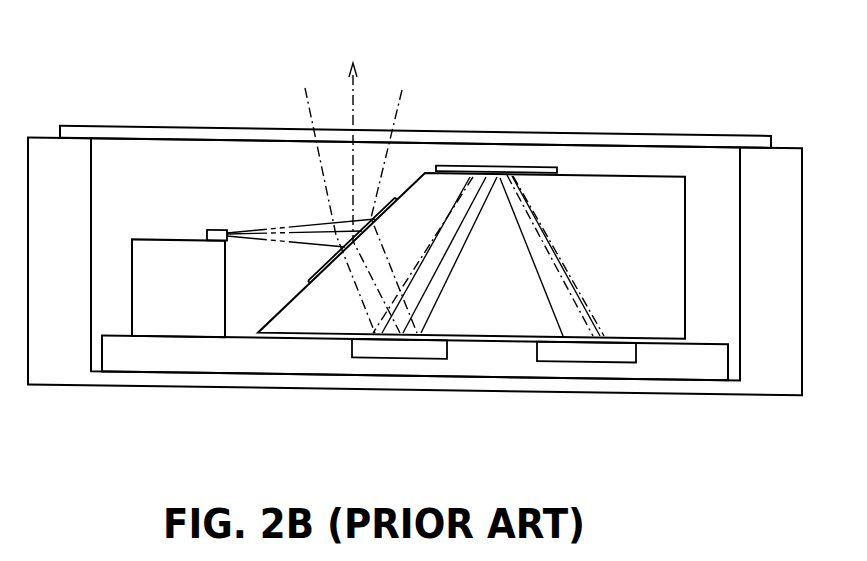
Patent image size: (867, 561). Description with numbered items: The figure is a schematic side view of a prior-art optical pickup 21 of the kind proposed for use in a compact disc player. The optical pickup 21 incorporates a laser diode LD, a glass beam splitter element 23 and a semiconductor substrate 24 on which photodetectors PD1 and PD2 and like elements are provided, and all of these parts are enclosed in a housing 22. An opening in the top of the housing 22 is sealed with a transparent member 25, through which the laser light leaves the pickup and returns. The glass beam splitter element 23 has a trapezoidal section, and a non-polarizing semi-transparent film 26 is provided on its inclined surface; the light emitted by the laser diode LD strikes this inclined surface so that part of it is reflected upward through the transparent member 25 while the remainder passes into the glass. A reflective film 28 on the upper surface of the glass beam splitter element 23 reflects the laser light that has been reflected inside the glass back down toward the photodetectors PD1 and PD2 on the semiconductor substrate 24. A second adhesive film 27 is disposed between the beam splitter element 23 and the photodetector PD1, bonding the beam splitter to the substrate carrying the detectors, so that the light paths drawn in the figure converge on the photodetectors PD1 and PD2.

The optical pickup 21 is at (633, 48).
The housing 22 is at (791, 148).
The glass beam splitter element 23 is at (630, 185).
The semiconductor substrate 24 is at (165, 371).
The transparent member 25 is at (92, 124).
The non-polarizing semi-transparent film 26 is at (402, 178).
The second adhesive film 27 is at (318, 341).
The reflective film 28 is at (458, 166).
The laser diode LD is at (212, 228).
The photodetector PD1 is at (400, 353).
The photodetector PD2 is at (588, 354).